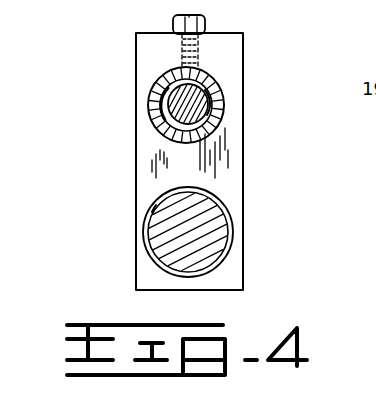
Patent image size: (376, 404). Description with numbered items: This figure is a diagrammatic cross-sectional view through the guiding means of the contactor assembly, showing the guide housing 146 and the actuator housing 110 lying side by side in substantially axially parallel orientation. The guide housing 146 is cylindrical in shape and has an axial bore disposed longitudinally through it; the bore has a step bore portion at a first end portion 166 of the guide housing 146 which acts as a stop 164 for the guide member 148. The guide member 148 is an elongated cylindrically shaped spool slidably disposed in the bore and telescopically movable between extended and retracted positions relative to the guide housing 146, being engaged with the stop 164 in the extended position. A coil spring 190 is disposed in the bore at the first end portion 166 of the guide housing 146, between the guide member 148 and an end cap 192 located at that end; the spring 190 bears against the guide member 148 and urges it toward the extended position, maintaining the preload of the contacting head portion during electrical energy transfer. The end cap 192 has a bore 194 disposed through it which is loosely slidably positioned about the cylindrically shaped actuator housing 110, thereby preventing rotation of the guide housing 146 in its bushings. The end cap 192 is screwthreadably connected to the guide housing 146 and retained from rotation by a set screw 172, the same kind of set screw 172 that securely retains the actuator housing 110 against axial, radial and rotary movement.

The actuator housing 110 is at (149, 237).
The guide housing 146 is at (221, 92).
The guide member 148 is at (214, 120).
The stop 164 is at (152, 127).
The first end portion 166 is at (220, 108).
The set screw 172 is at (206, 20).
The coil spring 190 is at (155, 86).
The end cap 192 is at (230, 180).
The bore 194 is at (150, 214).